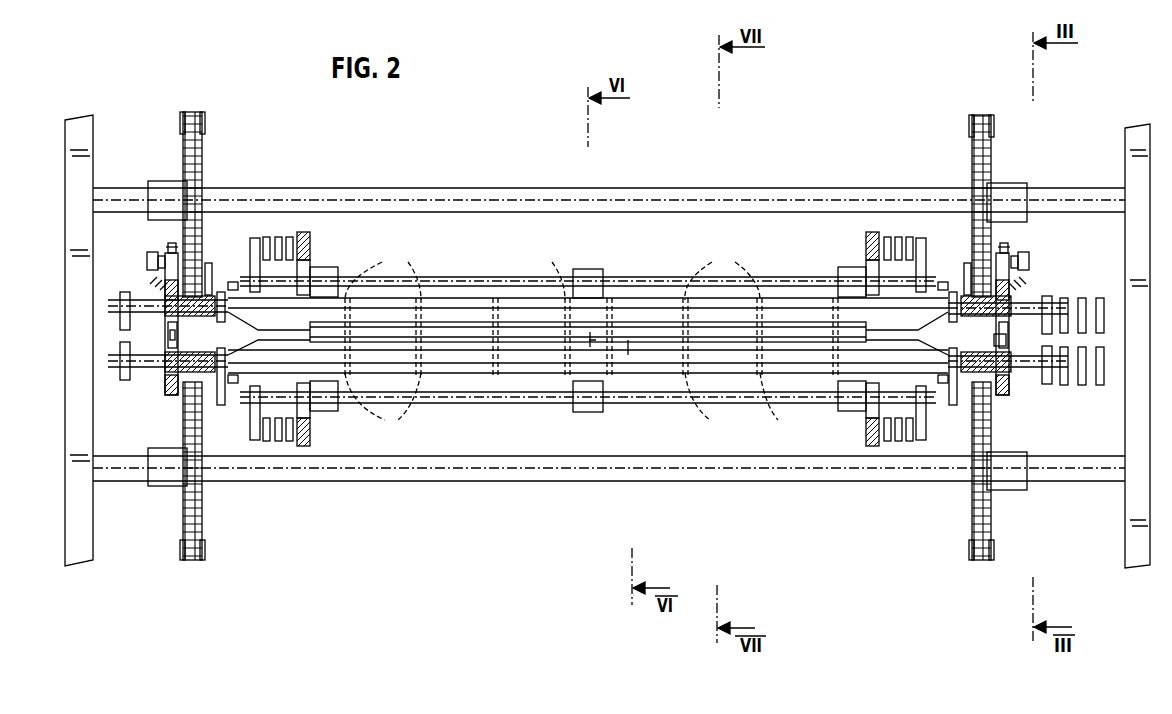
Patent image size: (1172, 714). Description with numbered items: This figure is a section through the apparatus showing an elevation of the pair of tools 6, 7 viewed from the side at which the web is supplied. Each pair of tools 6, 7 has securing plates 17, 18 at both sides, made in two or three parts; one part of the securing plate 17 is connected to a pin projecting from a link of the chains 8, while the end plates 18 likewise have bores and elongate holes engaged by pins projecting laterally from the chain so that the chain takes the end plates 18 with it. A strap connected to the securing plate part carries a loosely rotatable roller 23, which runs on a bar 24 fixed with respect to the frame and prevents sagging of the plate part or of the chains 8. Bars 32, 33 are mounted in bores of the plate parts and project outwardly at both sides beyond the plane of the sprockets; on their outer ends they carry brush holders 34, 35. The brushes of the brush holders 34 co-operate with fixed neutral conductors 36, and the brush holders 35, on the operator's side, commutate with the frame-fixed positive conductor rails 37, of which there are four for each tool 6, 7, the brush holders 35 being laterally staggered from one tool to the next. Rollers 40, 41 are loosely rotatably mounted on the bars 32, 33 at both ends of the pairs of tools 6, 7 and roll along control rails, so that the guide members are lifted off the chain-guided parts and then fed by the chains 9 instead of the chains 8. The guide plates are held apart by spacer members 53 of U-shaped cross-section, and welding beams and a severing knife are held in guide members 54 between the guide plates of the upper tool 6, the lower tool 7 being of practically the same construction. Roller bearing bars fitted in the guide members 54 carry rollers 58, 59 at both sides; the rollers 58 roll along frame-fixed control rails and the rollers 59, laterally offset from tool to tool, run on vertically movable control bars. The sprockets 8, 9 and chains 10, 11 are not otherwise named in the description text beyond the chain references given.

The upper tool 6 is at (768, 147).
The lower tool 7 is at (683, 497).
The chains 8 is at (203, 125).
The chains 9 is at (203, 560).
The upper chain 10 is at (202, 158).
The lower chain 11 is at (202, 518).
The securing plate 17 is at (1006, 342).
The end plate 18 is at (172, 395).
The roller 23 is at (150, 252).
The bar 24 is at (154, 288).
The bar 32 is at (470, 300).
The bar 33 is at (588, 332).
The brush holder 34 is at (122, 292).
The brush holder 35 is at (1050, 296).
The neutral conductor 36 is at (123, 330).
The positive conductor rail 37 is at (1104, 362).
The roller 40 is at (221, 292).
The roller 41 is at (208, 263).
The spacer member 53 is at (591, 341).
The guide member 54 is at (338, 273).
The roller 58 is at (310, 263).
The roller 59 is at (250, 270).